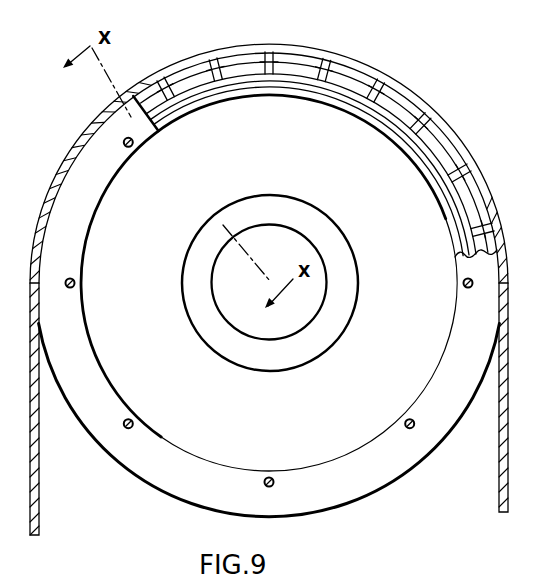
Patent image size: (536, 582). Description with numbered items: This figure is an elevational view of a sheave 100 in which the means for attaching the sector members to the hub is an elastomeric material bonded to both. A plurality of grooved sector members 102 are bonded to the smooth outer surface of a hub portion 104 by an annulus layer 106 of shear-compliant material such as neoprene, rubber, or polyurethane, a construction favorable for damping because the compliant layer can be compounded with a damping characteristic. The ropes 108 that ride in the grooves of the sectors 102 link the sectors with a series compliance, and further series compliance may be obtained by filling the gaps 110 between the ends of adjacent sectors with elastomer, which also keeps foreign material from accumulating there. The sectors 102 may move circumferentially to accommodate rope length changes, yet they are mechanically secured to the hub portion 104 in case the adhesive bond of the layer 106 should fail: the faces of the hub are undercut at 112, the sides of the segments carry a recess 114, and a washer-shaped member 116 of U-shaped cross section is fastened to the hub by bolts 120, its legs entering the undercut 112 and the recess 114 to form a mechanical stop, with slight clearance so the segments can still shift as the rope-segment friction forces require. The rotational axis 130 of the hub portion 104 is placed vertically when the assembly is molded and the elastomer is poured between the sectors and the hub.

The sheave 100 is at (448, 426).
The grooved sector members 102 is at (454, 147).
The hub portion 104 is at (392, 120).
The annulus layer of shear-compliant material 106 is at (291, 50).
The ropes 108 is at (40, 480).
The gaps between ends of adjacent sectors 110 is at (268, 50).
The undercut 112 is at (305, 95).
The recess 114 is at (193, 70).
The first washer-shaped member 116 is at (82, 163).
The bolts 120 is at (133, 141).
The rotational axis 130 is at (270, 282).